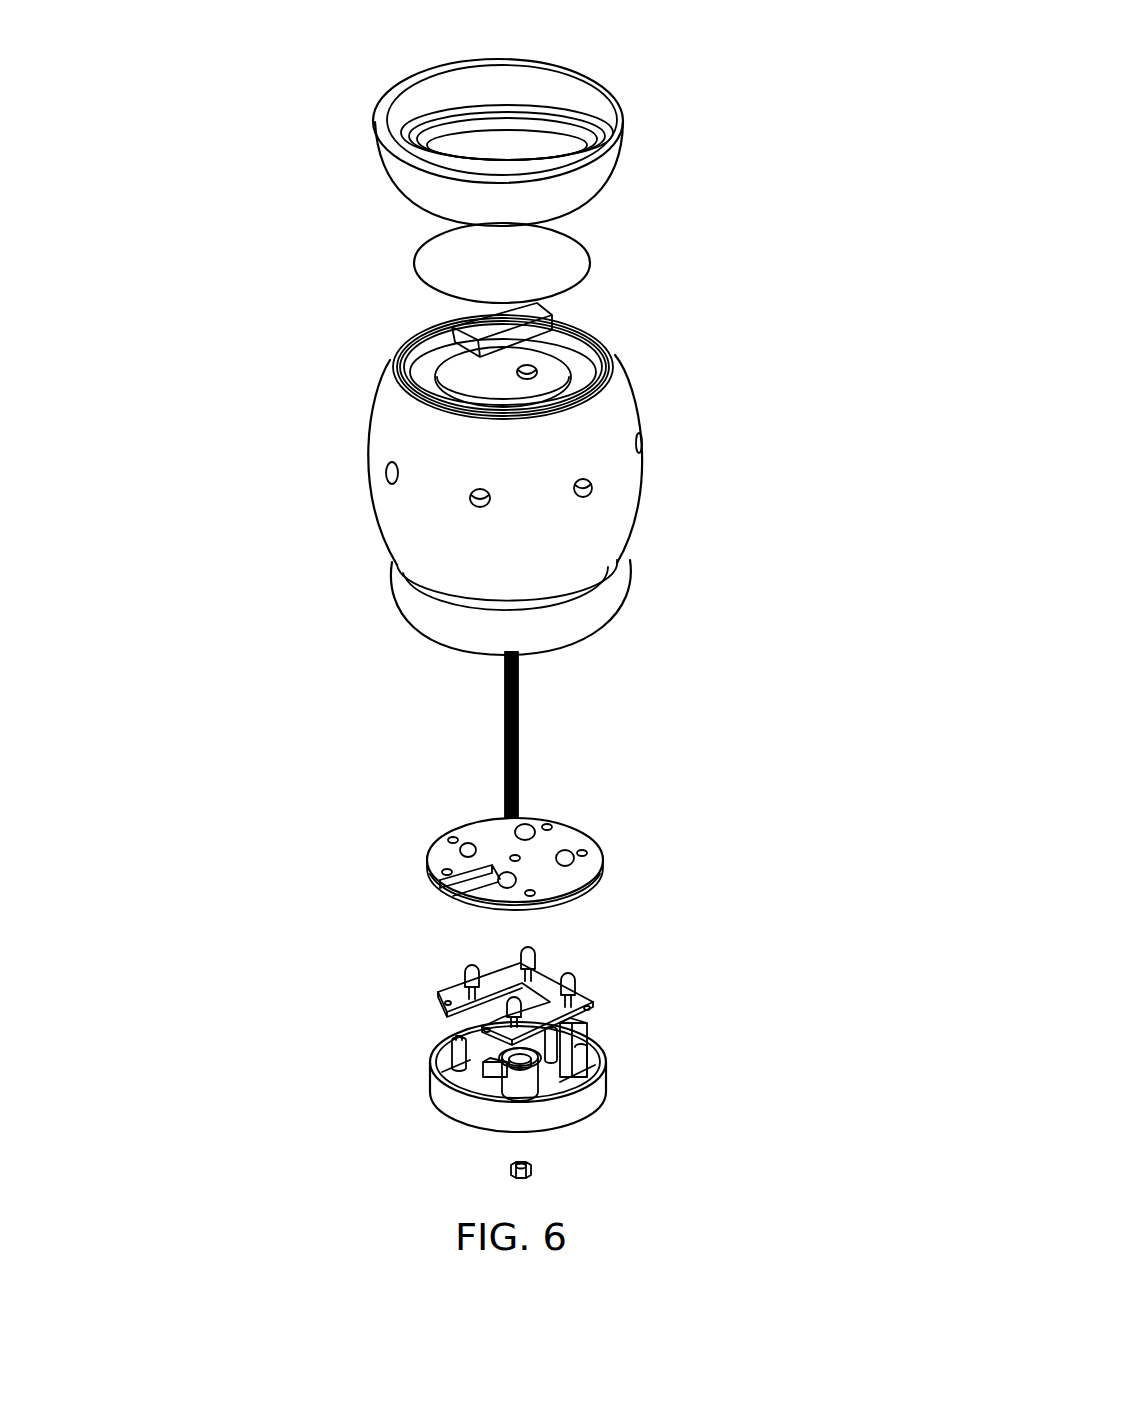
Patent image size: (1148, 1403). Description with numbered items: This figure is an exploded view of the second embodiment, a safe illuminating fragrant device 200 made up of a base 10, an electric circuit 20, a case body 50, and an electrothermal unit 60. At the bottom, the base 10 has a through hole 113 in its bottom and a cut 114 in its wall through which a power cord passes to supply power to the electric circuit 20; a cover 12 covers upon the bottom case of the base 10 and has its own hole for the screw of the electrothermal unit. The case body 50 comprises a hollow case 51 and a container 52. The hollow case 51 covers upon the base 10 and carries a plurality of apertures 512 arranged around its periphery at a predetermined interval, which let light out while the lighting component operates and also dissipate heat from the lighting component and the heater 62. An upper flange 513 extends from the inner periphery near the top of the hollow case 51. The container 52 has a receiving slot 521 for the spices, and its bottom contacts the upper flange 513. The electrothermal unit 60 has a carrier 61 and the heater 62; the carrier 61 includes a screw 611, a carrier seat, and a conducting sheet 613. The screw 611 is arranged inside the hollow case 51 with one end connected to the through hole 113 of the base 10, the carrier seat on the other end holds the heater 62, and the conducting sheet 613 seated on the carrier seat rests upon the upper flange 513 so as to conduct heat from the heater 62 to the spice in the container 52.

The safe illuminating fragrant device 200 is at (320, 72).
The case body 50 is at (828, 185).
The container 52 is at (586, 132).
The receiving slot 521 is at (500, 162).
The hollow case 51 is at (600, 460).
The upper flange 513 is at (577, 362).
The apertures 512 is at (590, 488).
The electrothermal unit 60 is at (218, 266).
The conducting sheet 613 is at (438, 261).
The heater 62 is at (450, 324).
The carrier 61 is at (376, 729).
The screw 611 is at (506, 778).
The cover 12 is at (565, 838).
The electric circuit 20 is at (540, 990).
The base 10 is at (499, 1080).
The through hole 113 is at (545, 1057).
The cut 114 is at (587, 1033).